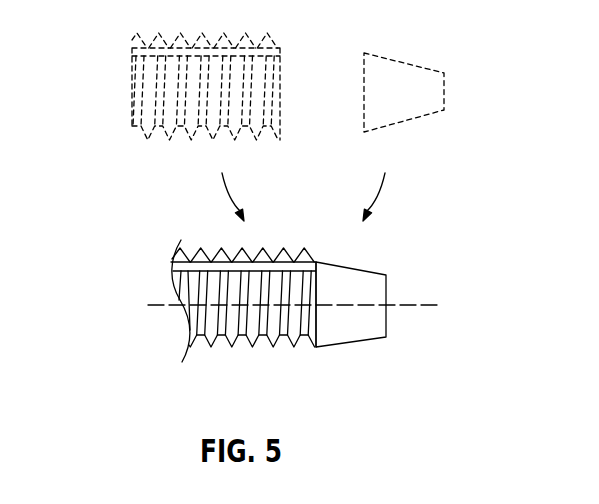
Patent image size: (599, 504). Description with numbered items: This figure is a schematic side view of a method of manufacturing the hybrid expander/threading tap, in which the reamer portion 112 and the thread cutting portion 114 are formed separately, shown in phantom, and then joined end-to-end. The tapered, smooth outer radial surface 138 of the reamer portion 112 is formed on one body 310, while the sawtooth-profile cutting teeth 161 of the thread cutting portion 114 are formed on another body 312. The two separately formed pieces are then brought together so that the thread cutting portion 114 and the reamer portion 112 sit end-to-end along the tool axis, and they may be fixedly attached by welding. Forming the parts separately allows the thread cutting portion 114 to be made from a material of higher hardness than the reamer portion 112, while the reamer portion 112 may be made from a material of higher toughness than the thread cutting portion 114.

The reamer portion 112 is at (415, 226).
The thread cutting portion 114 is at (182, 219).
The outer radial surface 138 is at (370, 290).
The cutting teeth 161 is at (262, 250).
The body 310 is at (425, 114).
The body 312 is at (131, 72).